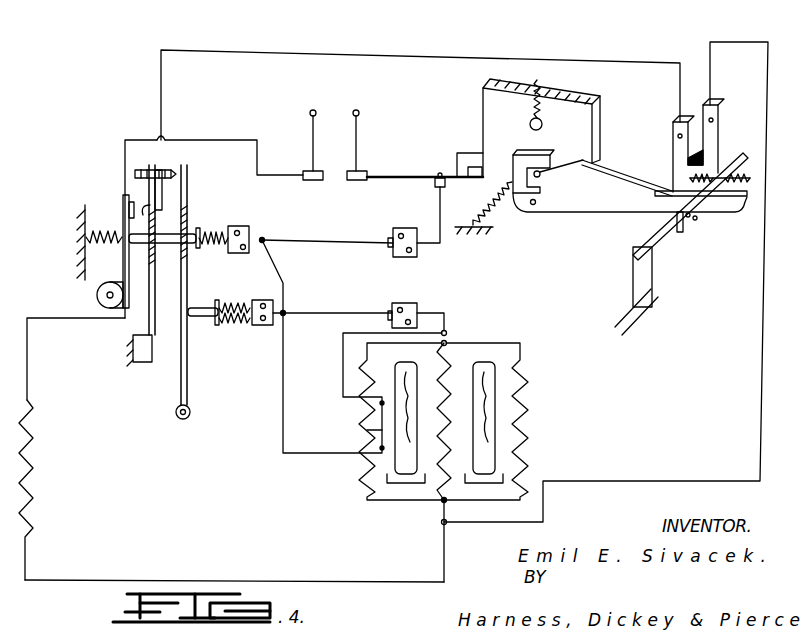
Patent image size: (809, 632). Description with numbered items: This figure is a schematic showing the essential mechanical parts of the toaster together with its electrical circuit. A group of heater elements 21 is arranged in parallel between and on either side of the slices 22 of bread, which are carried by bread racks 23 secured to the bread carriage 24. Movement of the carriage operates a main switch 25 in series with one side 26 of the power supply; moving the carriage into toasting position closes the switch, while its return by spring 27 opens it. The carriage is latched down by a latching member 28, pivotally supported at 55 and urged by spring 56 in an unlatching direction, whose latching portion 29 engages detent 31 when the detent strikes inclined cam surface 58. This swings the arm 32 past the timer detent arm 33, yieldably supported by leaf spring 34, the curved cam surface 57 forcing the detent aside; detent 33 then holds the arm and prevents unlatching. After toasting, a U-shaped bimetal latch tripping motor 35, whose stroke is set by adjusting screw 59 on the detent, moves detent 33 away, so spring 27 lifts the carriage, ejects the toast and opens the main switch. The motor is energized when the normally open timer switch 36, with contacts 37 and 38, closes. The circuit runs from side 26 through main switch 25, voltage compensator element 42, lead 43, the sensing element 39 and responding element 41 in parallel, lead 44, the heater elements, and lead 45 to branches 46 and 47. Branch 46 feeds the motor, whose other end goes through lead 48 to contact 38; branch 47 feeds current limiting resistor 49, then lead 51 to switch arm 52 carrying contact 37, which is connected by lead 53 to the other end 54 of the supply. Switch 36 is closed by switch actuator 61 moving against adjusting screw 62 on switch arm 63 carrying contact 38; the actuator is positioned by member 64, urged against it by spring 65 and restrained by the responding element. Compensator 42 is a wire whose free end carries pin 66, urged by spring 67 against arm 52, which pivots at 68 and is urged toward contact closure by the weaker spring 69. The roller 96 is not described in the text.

The heater elements 21 is at (447, 370).
The slices 22 is at (370, 372).
The bread racks 23 is at (405, 483).
The bread carriage 24 is at (595, 125).
The main switch 25 is at (440, 173).
The one side of the power supply 26 is at (359, 118).
The spring 27 is at (542, 84).
The latching member 28 is at (618, 178).
The latching portion 29 is at (540, 150).
The detent 31 is at (541, 178).
The arm 32 is at (723, 207).
The timer detent arm 33 is at (707, 212).
The leaf spring 34 is at (665, 230).
The bimetal latch tripping motor 35 is at (733, 122).
The timer switch 36 is at (104, 216).
The contact 37 is at (126, 214).
The contact 38 is at (146, 206).
The sensing element 39 is at (365, 430).
The responding element 41 is at (300, 313).
The voltage compensator element 42 is at (290, 242).
The lead 43 is at (278, 268).
The lead 44 is at (447, 333).
The lead 45 is at (441, 522).
The branch 46 is at (630, 481).
The branch 47 is at (300, 582).
The lead 48 is at (404, 34).
The current limiting resistor 49 is at (26, 470).
The lead 51 is at (28, 350).
The switch arm 52 is at (122, 270).
The lead 53 is at (238, 140).
The other end of the power supply 54 is at (316, 118).
The pivot 55 is at (535, 204).
The spring 56 is at (490, 198).
The curved cam surface 57 is at (748, 195).
The inclined cam surface 58 is at (581, 163).
The adjusting screw 59 is at (750, 178).
The switch actuator 61 is at (190, 205).
The adjusting screw 62 is at (163, 170).
The switch arm 63 is at (171, 288).
The member 64 is at (200, 305).
The spring 65 is at (238, 300).
The pin 66 is at (212, 228).
The spring 67 is at (220, 248).
The pivot 68 is at (96, 295).
The spring 69 is at (86, 230).
The roller 96 is at (176, 418).